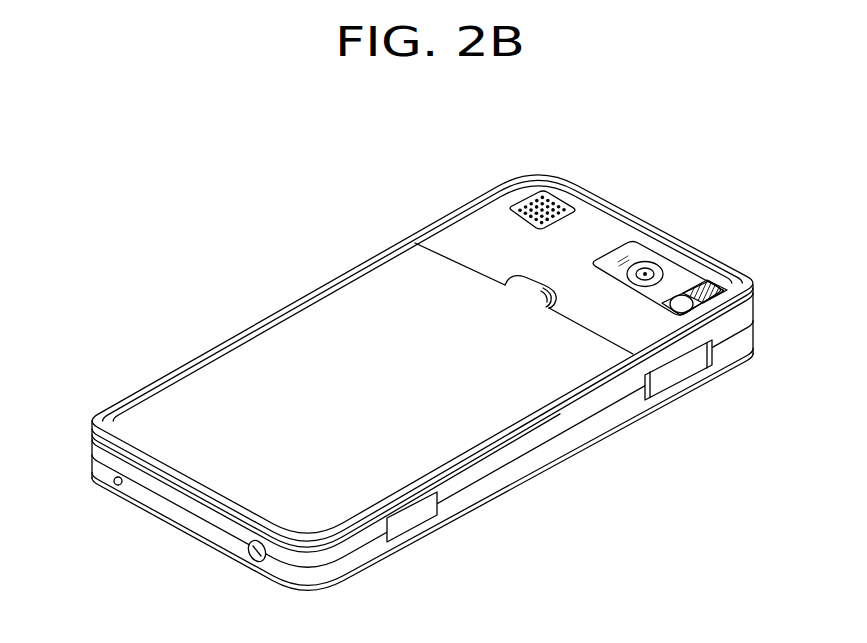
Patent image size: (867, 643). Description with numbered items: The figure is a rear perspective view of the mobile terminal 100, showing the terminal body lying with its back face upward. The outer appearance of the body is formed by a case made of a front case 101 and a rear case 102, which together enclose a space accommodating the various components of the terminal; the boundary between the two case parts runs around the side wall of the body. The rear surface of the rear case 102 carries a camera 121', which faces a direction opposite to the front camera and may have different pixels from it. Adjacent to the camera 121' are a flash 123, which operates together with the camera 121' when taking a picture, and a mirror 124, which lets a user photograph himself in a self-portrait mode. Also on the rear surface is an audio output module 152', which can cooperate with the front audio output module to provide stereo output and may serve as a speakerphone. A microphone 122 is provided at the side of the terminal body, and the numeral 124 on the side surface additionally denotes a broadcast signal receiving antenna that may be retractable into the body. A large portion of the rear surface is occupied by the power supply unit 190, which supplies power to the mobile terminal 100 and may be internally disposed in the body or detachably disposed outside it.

The mobile terminal 100 is at (376, 212).
The front case 101 is at (743, 340).
The rear case 102 is at (745, 320).
The camera 121' is at (657, 251).
The microphone 122 is at (112, 485).
The flash 123 is at (713, 290).
The mirror 124 is at (681, 297).
The audio output module 152' is at (575, 188).
The power supply unit 190 is at (340, 313).